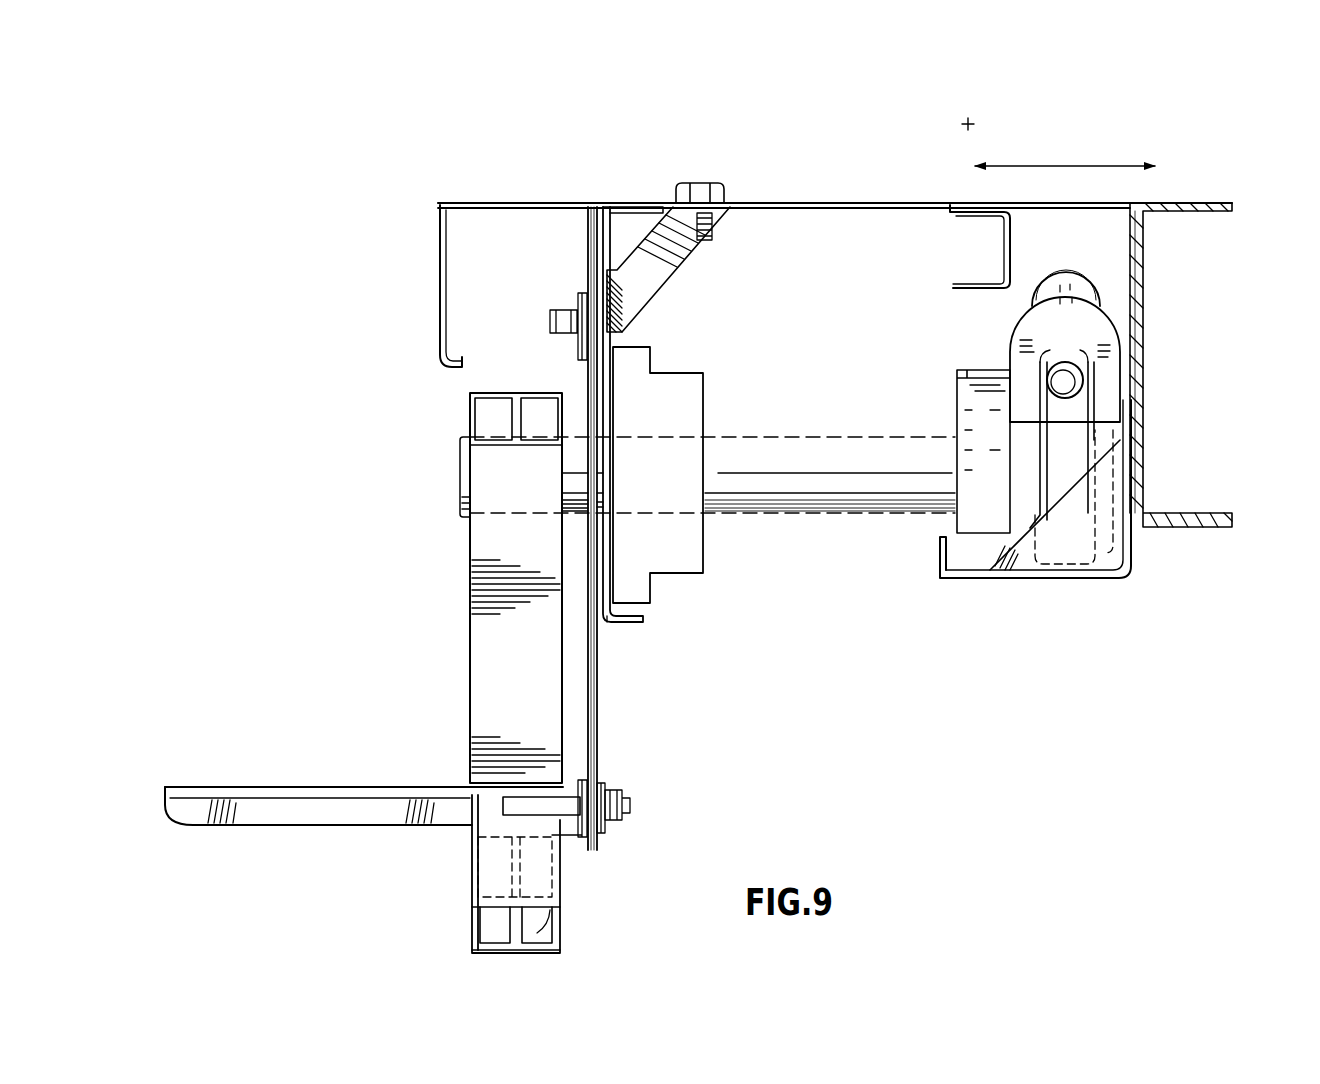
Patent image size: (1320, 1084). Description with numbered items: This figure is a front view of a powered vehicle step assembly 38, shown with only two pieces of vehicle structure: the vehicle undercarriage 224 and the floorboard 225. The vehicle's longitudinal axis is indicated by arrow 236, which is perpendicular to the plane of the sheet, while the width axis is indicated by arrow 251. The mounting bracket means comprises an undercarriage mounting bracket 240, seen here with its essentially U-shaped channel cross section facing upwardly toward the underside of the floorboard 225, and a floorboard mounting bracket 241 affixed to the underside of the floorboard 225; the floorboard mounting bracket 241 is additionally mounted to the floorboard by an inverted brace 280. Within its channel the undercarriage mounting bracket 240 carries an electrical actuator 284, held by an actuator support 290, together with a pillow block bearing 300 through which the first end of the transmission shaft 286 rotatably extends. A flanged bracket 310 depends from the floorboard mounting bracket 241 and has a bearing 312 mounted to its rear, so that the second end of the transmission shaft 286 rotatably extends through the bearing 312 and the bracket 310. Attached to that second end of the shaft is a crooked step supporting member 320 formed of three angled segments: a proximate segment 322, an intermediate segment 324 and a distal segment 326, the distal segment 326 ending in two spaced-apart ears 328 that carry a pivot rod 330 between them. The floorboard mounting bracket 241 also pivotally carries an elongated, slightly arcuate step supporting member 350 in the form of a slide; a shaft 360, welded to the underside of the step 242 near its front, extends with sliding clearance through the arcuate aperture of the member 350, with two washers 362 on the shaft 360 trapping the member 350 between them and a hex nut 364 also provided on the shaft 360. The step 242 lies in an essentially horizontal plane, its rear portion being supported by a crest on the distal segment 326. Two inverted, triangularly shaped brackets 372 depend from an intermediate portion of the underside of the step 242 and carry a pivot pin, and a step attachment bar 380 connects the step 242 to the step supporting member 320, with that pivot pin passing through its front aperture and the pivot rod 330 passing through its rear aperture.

The floorboard 225 is at (800, 205).
The vehicle undercarriage 224 is at (1143, 305).
The longitudinal axis arrow 236 is at (976, 124).
The width axis arrow 251 is at (1117, 166).
The floorboard mounting bracket 241 is at (600, 240).
The inverted brace 280 is at (652, 262).
The electrical actuator 284 is at (1017, 334).
The pillow block bearing 300 is at (961, 373).
The transmission shaft 286 is at (820, 448).
The proximate segment 322 is at (516, 393).
The step assembly 38 is at (313, 463).
The step supporting member 320 is at (448, 549).
The bearing 312 is at (683, 565).
The flanged bracket 310 is at (640, 626).
The intermediate segment 324 is at (495, 692).
The step 242 is at (257, 787).
The step supporting member 350 is at (597, 720).
The shaft 360 is at (563, 800).
The hex nut 364 is at (615, 796).
The washers 362 is at (582, 843).
The inverted triangular brackets 372 is at (478, 844).
The pivot rod 330 is at (555, 878).
The distal segment 326 is at (478, 906).
The ears 328 is at (558, 921).
The step attachment bar 380 is at (558, 941).
The actuator support 290 is at (1090, 572).
The undercarriage mounting bracket 240 is at (1129, 576).